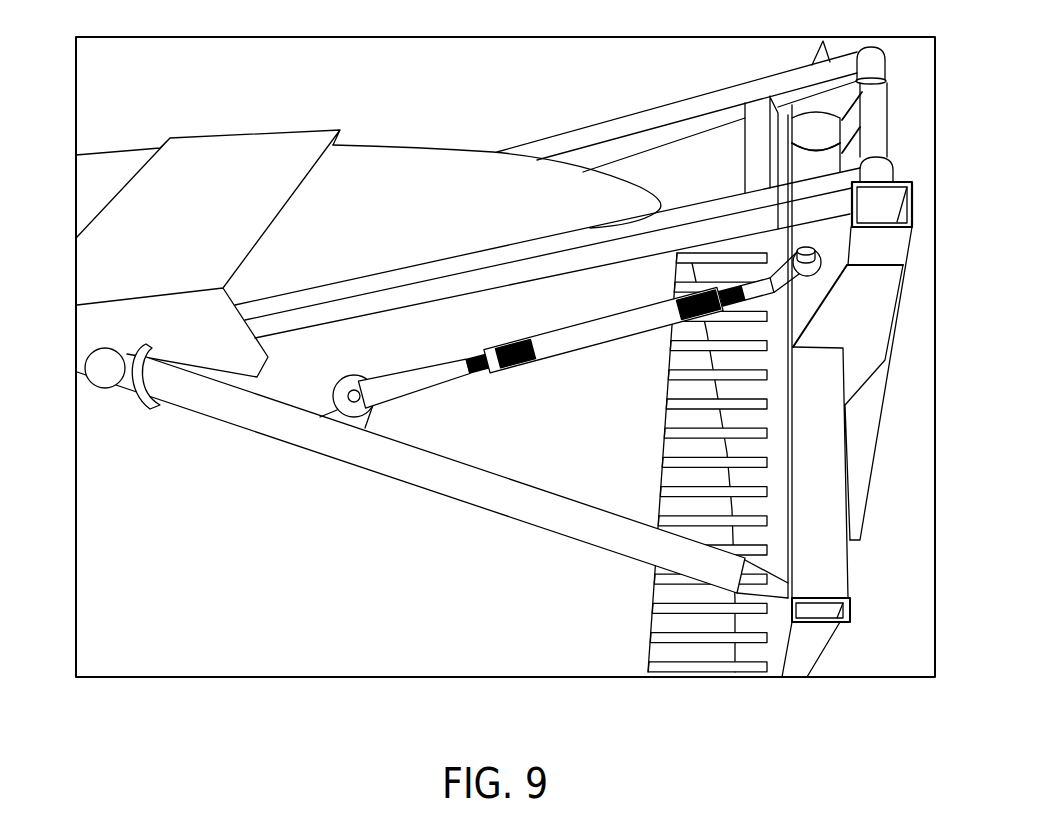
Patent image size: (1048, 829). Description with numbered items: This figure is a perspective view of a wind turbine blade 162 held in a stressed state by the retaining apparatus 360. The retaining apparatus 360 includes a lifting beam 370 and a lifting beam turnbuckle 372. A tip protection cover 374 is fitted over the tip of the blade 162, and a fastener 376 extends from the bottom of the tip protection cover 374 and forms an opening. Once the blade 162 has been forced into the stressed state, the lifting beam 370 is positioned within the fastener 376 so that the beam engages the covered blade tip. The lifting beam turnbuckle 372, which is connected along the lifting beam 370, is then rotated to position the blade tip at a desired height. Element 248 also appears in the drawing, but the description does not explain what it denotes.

The cover 162 is at (368, 172).
The upper beam 248 is at (467, 172).
The rack assembly 360 is at (908, 373).
The support arm 370 is at (365, 472).
The adjustable tie rod 372 is at (573, 358).
The panel 374 is at (205, 170).
The ball joint 376 is at (150, 411).